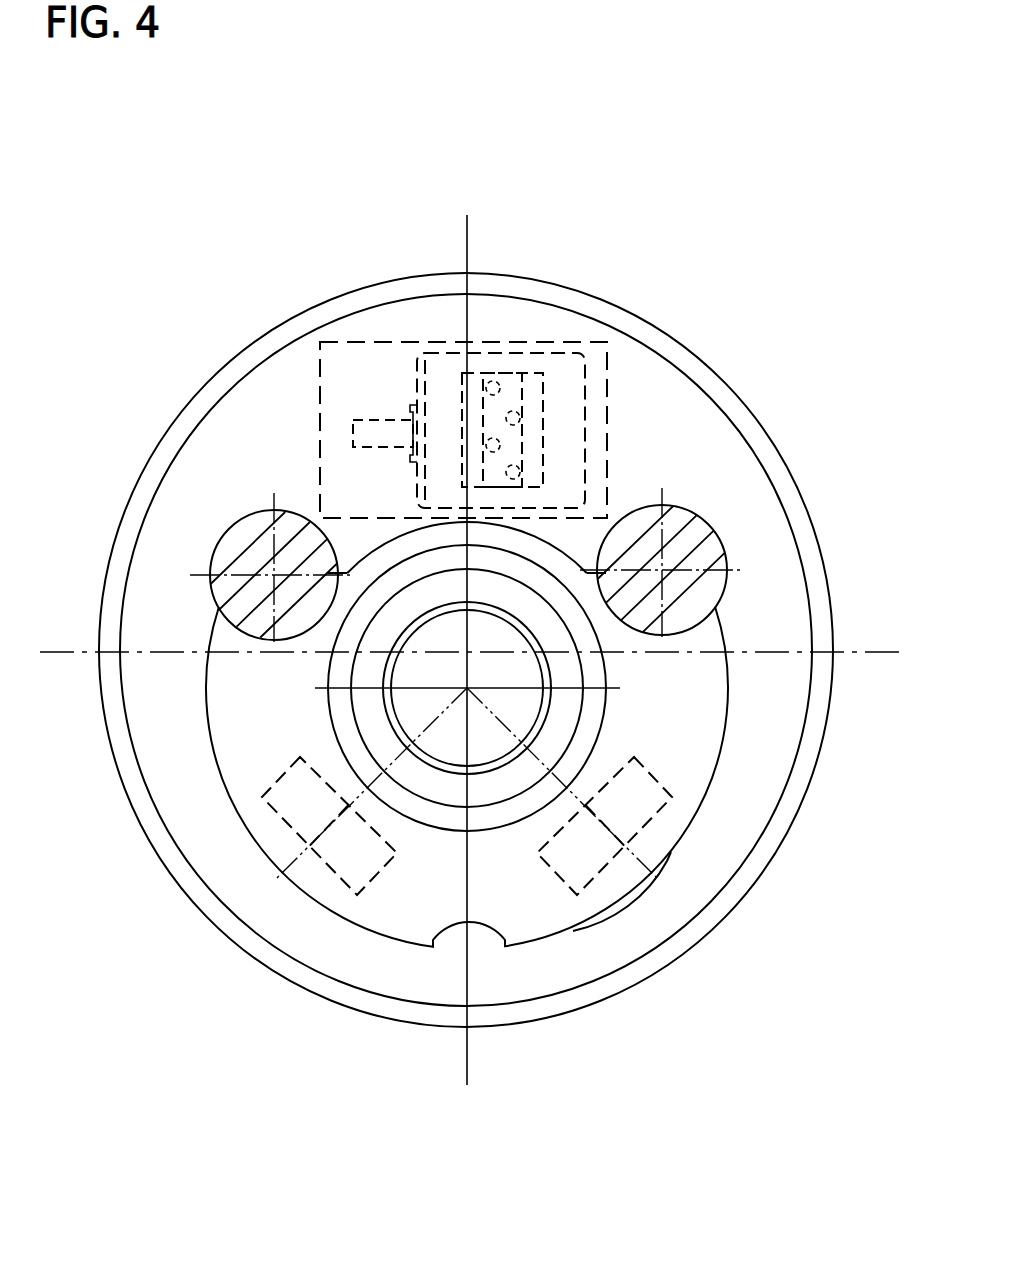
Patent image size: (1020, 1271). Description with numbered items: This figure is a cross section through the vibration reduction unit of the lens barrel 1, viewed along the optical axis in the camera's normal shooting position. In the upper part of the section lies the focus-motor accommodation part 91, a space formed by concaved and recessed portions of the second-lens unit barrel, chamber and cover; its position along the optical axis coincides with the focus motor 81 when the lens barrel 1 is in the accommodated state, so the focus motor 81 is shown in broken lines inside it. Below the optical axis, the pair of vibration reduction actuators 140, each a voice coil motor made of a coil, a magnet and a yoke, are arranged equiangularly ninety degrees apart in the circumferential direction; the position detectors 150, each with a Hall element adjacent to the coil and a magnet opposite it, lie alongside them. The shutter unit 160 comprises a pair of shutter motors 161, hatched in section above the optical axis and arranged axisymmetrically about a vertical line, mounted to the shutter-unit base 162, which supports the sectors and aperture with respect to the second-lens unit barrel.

The lens barrel 1 is at (154, 295).
The focus motor 81 is at (559, 348).
The focus-motor accommodation part 91 is at (356, 382).
The vibration reduction actuator 140 is at (479, 923).
The position detector 150 is at (340, 875).
The shutter unit 160 is at (188, 813).
The shutter motor 161 is at (218, 545).
The shutter-unit base 162 is at (707, 752).